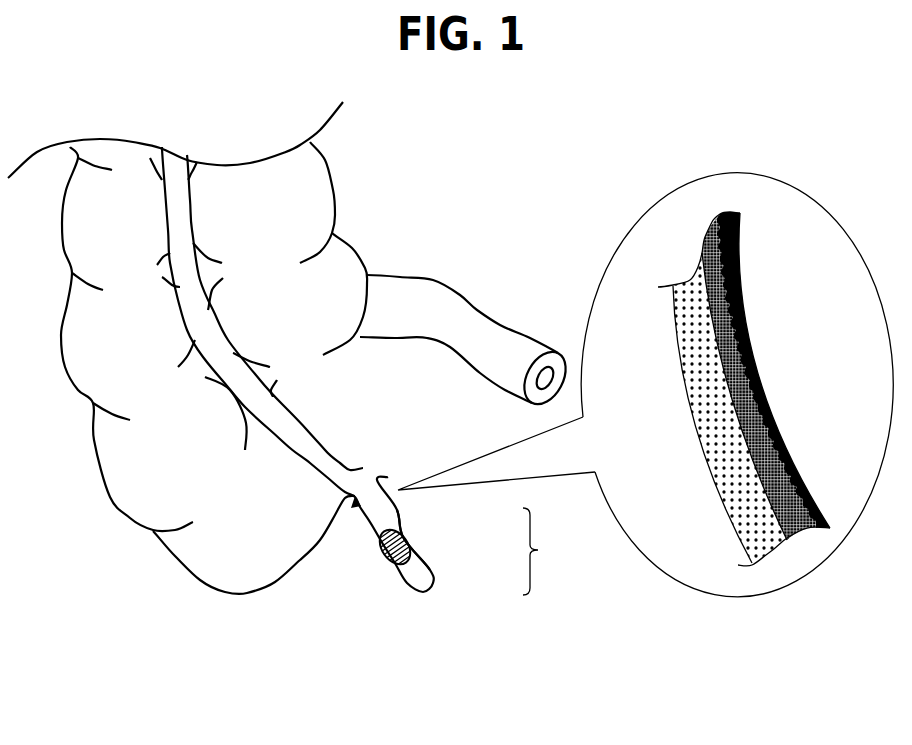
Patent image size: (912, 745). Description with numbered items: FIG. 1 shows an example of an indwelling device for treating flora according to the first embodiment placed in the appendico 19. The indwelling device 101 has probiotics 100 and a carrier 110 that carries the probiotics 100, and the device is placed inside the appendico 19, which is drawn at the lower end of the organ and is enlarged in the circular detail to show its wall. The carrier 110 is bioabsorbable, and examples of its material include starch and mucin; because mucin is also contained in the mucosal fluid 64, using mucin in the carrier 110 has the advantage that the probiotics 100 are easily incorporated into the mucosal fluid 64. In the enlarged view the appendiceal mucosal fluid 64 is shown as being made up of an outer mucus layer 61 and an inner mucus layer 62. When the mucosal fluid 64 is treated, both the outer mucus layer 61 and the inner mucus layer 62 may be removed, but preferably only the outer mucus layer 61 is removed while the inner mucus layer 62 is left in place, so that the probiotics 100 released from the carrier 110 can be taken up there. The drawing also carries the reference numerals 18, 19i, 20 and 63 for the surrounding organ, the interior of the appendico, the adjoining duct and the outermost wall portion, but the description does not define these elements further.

The liver 18 is at (233, 562).
The appendico 19 is at (422, 575).
The lumen of bile duct 19i is at (356, 502).
The pancreatic duct 20 is at (477, 323).
The probiotics 100 is at (405, 533).
The carrier 110 is at (413, 557).
The indwelling device for treating flora 101 is at (554, 551).
The outer mucus layer 61 is at (760, 548).
The inner mucus layer 62 is at (792, 531).
The serosal layer 63 is at (822, 532).
The mucosal fluid 64 is at (738, 648).